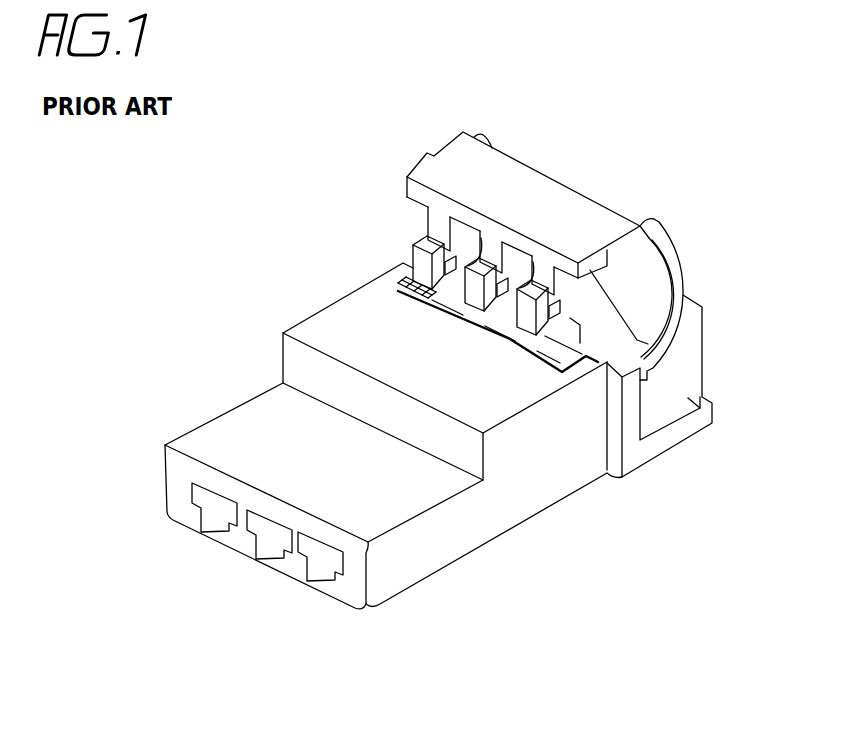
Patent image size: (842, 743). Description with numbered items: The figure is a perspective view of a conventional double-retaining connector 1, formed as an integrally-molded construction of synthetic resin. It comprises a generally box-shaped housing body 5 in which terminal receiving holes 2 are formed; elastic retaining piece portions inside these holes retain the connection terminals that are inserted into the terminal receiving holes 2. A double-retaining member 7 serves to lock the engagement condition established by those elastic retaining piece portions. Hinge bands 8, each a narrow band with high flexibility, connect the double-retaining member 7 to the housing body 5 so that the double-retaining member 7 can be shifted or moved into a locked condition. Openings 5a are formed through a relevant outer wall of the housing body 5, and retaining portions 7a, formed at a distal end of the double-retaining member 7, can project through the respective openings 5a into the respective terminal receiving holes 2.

The double-retaining connector 1 is at (322, 298).
The terminal receiving holes 2 is at (215, 513).
The housing body 5 is at (533, 503).
The openings 5a is at (427, 292).
The double-retaining member 7 is at (449, 153).
The retaining portions 7a is at (427, 243).
The hinge bands 8 is at (668, 263).